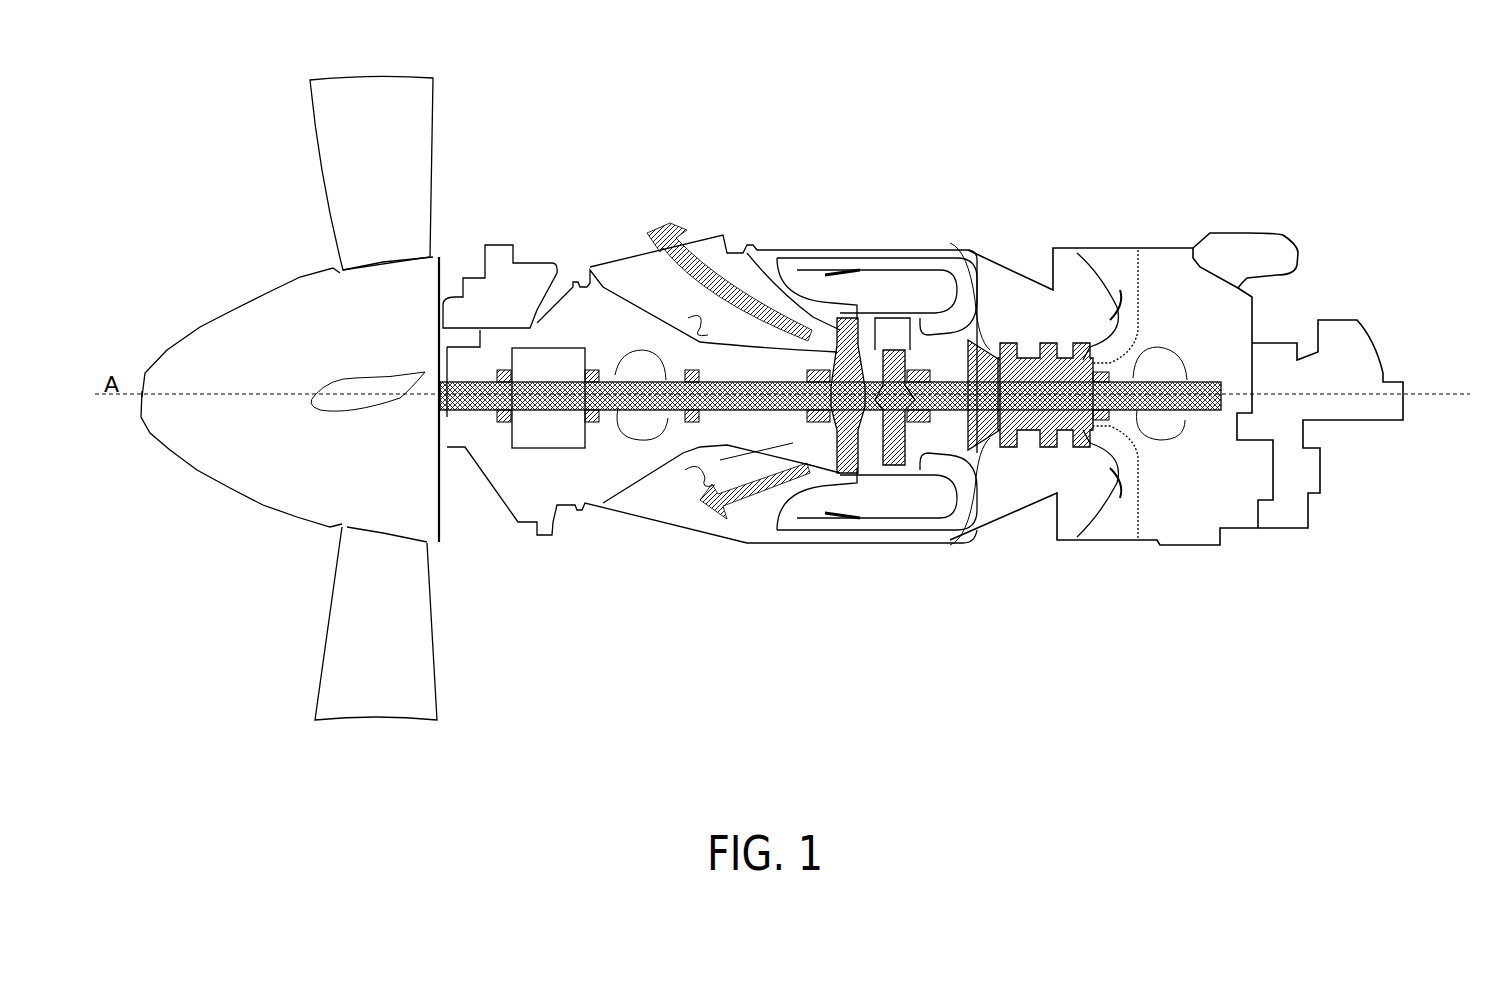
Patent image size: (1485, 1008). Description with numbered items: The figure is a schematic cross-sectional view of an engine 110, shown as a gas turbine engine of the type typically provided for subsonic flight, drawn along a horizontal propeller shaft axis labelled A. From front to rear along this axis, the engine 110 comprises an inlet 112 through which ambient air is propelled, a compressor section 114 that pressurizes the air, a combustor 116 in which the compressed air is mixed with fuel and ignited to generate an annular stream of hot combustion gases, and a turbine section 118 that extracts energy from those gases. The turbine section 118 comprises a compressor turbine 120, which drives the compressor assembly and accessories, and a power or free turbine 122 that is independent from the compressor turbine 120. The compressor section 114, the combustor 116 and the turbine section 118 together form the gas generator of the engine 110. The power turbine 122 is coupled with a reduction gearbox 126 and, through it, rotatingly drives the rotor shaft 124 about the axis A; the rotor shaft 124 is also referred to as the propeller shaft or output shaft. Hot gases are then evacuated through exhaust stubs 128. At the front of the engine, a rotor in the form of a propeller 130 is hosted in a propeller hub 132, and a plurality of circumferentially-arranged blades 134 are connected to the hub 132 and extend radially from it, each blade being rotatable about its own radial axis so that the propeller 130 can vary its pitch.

The engine 110 is at (781, 140).
The inlet 112 is at (1105, 272).
The compressor section 114 is at (1010, 290).
The combustor 116 is at (900, 280).
The turbine section 118 is at (875, 400).
The compressor turbine 120 is at (975, 470).
The power turbine 122 is at (873, 393).
The rotor shaft 124 is at (567, 435).
The reduction gearbox 126 is at (548, 400).
The exhaust stubs 128 is at (630, 220).
The propeller 130 is at (320, 257).
The propeller hub 132 is at (267, 313).
The blades 134 is at (342, 148).